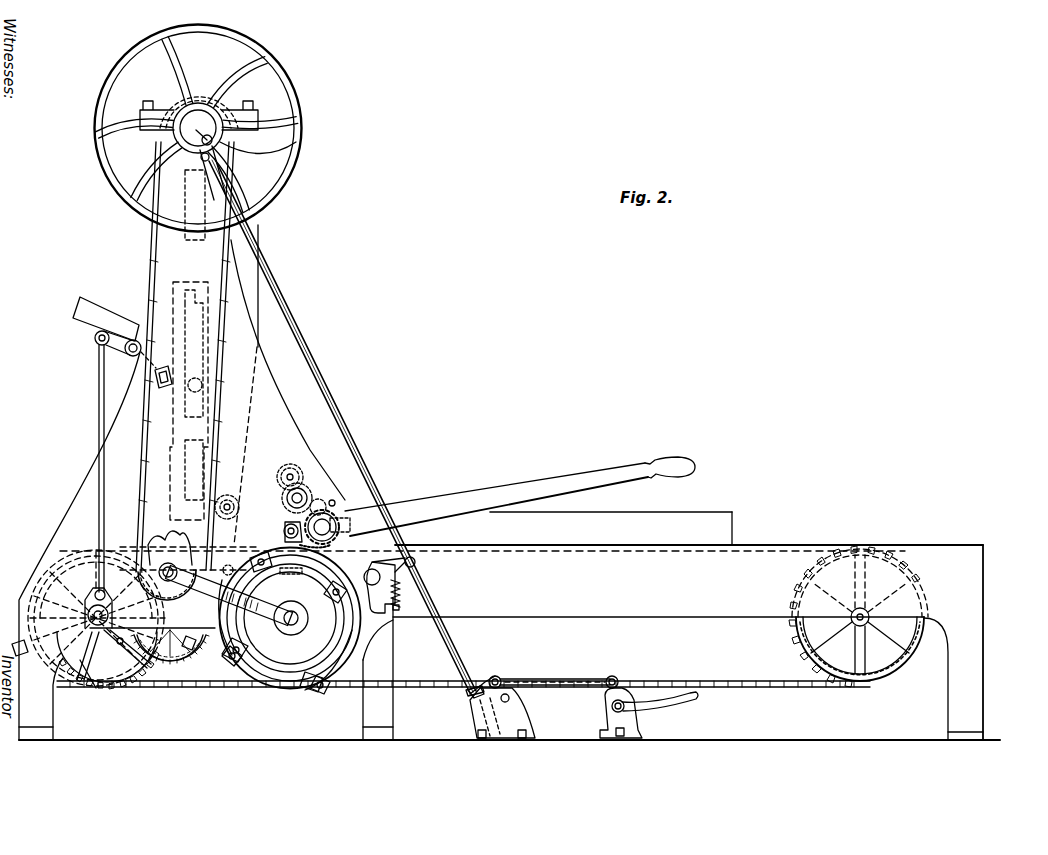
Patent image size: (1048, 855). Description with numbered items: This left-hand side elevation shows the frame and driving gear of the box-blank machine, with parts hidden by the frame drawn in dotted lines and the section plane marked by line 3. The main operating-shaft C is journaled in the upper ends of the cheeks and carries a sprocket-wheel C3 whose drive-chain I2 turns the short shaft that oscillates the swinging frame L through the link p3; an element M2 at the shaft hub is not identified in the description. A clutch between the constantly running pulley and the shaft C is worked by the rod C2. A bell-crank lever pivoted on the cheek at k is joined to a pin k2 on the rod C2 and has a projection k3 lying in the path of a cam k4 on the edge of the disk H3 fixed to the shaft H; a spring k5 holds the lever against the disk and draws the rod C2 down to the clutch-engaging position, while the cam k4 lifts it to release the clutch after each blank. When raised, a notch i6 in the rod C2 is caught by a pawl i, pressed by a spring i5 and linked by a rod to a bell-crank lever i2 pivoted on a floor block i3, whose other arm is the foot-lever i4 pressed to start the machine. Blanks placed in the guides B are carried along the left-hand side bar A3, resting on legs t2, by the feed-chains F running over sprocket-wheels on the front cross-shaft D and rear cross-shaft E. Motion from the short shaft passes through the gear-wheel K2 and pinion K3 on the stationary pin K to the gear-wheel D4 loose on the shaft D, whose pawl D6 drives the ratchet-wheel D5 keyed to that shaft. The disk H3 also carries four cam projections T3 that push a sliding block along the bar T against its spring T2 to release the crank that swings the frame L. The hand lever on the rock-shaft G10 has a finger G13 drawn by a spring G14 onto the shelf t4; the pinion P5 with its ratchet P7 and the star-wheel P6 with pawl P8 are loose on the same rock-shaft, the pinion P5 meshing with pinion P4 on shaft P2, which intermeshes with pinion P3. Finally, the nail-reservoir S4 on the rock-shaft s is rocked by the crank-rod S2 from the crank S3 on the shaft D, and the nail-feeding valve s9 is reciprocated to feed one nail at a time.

The section line 3 is at (355, 440).
The main operating-shaft C is at (226, 130).
The fly-wheel hub M2 is at (200, 92).
The sprocket-wheel C3 is at (196, 156).
The drive-chain I2 is at (150, 286).
The rod C2 is at (290, 312).
The nail-reservoir S4 is at (84, 298).
The rock-shaft s is at (132, 356).
The nail-feeding valve s9 is at (163, 364).
The crank-rod S2 is at (100, 430).
The crank S3 is at (86, 606).
The cross-shaft D is at (86, 612).
The gear-wheel D4 is at (136, 658).
The ratchet-wheel D5 is at (80, 656).
The pawl D6 is at (127, 646).
The pin or stationary shaft K is at (170, 636).
The gear-wheel K2 is at (166, 652).
The pinion K3 is at (192, 640).
The disk or wheel H3 is at (236, 652).
The swinging frame L is at (160, 548).
The link p3 is at (212, 568).
The spring T2 is at (226, 594).
The bar T is at (268, 622).
The lug or shelf t4 is at (290, 572).
The star-wheel P6 is at (326, 574).
The shaft H is at (290, 628).
The cam projections T3 is at (314, 688).
The pinion P3 is at (282, 470).
The pinion P4 is at (276, 498).
The shaft P2 is at (310, 494).
The pawl P8 is at (338, 500).
The pinion P5 is at (321, 499).
The rock-shaft G10 is at (338, 520).
The spring G14 is at (286, 526).
The finger G13 is at (288, 534).
The ratchet P7 is at (352, 536).
The guides B is at (680, 514).
The left-hand bar A3 is at (521, 642).
The pivot k is at (375, 585).
The pin k2 is at (418, 564).
The spring k5 is at (404, 600).
The projection k3 is at (396, 634).
The cam k4 is at (396, 648).
The feed-chains F is at (774, 696).
The cross-shaft E is at (855, 624).
The notch i6 is at (476, 680).
The pawl i is at (494, 676).
The spring i5 is at (470, 698).
The legs t2 is at (474, 718).
The bell-crank lever i2 is at (622, 682).
The block i3 is at (612, 716).
The treadle or foot-lever i4 is at (680, 700).